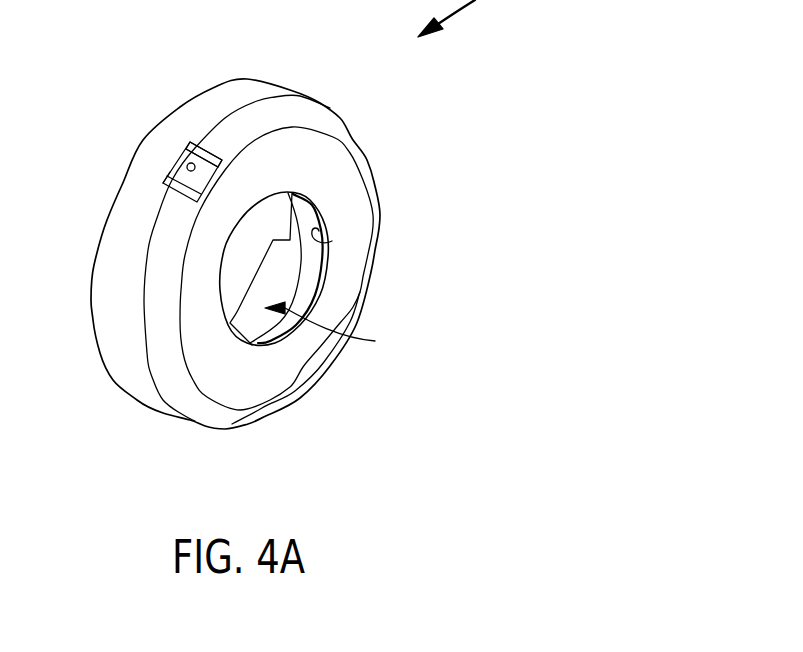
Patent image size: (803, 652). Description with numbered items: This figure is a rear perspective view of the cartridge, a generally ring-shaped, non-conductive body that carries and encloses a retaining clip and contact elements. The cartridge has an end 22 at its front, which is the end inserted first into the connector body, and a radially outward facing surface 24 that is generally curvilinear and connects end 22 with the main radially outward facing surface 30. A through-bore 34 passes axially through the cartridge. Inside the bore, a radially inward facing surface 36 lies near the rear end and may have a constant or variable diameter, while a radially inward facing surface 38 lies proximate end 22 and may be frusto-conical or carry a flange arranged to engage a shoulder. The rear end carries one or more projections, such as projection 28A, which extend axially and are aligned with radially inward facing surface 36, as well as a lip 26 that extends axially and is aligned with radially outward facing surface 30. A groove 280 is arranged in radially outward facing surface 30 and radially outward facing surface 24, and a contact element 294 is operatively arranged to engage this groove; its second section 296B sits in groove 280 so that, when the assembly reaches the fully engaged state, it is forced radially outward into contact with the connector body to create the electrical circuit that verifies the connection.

The end 22 is at (302, 362).
The radially outward facing surface 24 is at (167, 373).
The lip 26 is at (112, 203).
The projection 28A is at (277, 263).
The radially outward facing surface 30 is at (116, 326).
The through-bore 34 is at (331, 330).
The radially inward facing surface 36 is at (268, 280).
The radially inward facing surface 38 is at (332, 241).
The groove 280 is at (204, 128).
The contact element 294 is at (182, 173).
The second section 296B is at (188, 157).